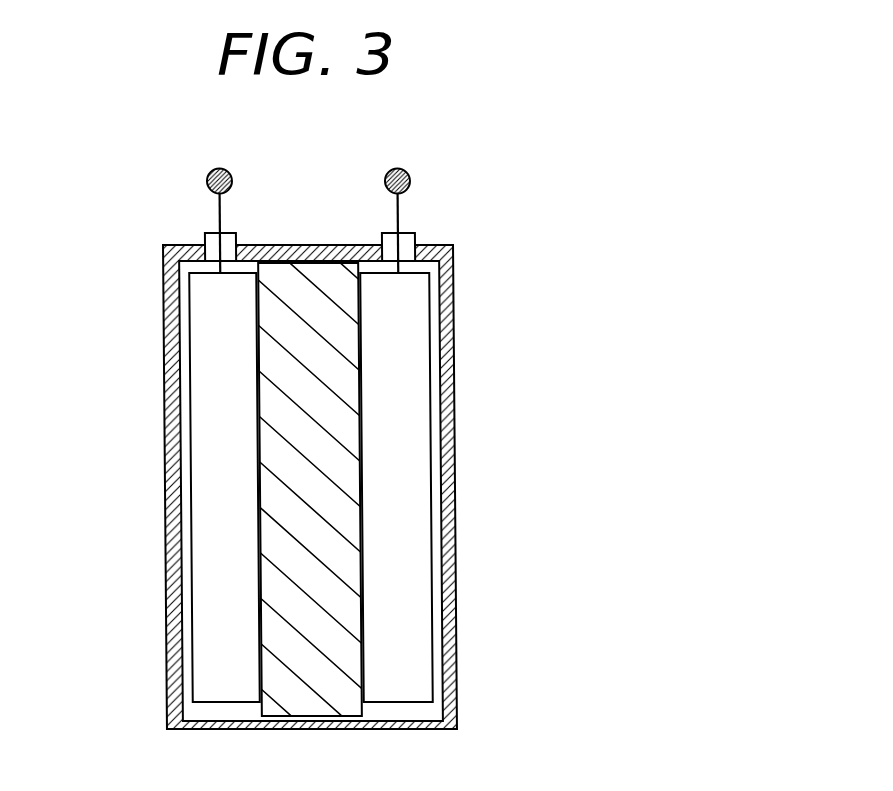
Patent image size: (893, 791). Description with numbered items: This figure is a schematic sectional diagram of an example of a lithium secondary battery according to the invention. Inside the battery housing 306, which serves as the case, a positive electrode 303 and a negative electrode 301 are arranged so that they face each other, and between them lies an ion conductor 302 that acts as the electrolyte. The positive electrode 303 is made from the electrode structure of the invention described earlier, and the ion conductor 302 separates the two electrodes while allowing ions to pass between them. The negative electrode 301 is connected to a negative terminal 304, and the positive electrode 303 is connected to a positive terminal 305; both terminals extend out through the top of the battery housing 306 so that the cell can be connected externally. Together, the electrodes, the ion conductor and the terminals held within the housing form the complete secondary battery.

The negative electrode 301 is at (212, 418).
The ion conductor 302 is at (328, 362).
The positive electrode 303 is at (398, 463).
The negative terminal 304 is at (220, 168).
The positive terminal 305 is at (392, 168).
The battery housing 306 is at (448, 576).